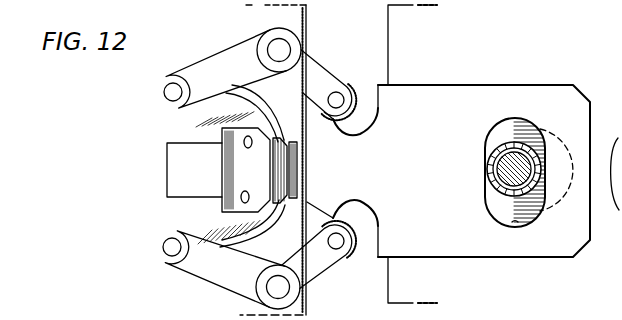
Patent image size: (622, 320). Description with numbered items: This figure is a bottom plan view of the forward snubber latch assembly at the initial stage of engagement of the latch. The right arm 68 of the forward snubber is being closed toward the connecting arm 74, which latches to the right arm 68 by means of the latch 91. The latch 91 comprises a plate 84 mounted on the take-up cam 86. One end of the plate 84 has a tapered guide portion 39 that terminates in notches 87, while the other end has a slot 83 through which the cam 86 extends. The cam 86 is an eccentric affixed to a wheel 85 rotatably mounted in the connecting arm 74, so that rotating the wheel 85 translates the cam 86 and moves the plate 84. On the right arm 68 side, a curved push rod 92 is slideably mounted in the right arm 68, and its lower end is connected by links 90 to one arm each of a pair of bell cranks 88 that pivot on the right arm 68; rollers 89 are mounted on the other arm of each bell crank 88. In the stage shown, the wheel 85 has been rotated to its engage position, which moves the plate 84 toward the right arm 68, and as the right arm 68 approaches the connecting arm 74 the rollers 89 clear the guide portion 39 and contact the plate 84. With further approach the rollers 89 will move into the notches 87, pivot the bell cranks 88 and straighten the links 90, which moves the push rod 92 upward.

The tapered guide portion 39 is at (335, 179).
The right arm 68 is at (242, 31).
The connecting arm 74 is at (423, 33).
The slot 83 is at (518, 222).
The plate 84 is at (446, 179).
The wheel 85 is at (512, 132).
The take-up cam 86 is at (497, 143).
The notches 87 is at (353, 201).
The bell cranks 88 is at (225, 65).
The rollers 89 is at (350, 86).
The links 90 is at (215, 113).
The latch 91 is at (415, 77).
The push rod 92 is at (206, 179).